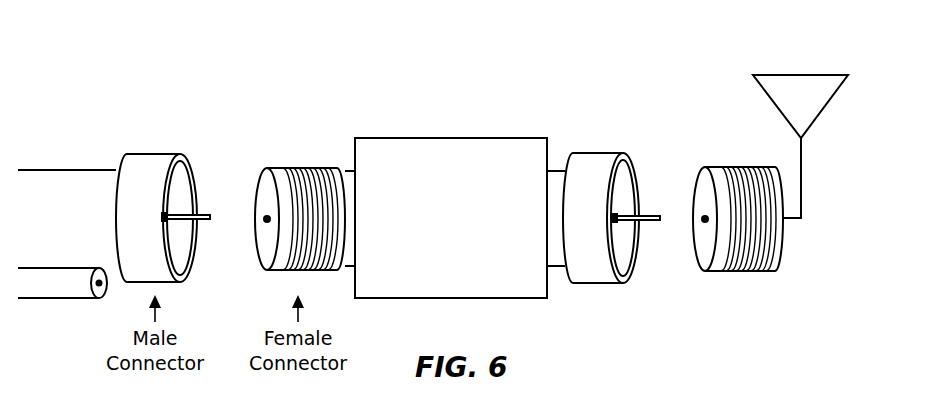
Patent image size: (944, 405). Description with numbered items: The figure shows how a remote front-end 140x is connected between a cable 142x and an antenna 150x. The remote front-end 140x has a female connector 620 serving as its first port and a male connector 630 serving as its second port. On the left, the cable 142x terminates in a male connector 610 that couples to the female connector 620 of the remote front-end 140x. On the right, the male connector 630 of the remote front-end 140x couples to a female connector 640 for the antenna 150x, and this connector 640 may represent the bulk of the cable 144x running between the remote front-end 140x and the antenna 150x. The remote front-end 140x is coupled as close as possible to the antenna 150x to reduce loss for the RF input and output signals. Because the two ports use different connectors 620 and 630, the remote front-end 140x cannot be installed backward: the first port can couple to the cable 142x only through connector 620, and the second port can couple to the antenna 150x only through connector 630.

The cable 142x is at (64, 128).
The male connector 610 is at (150, 153).
The female connector 620 is at (298, 167).
The remote front-end 140x is at (447, 137).
The male connector 630 is at (595, 153).
The female connector 640 is at (736, 166).
The antenna 150x is at (797, 75).
The cable 144x is at (804, 214).